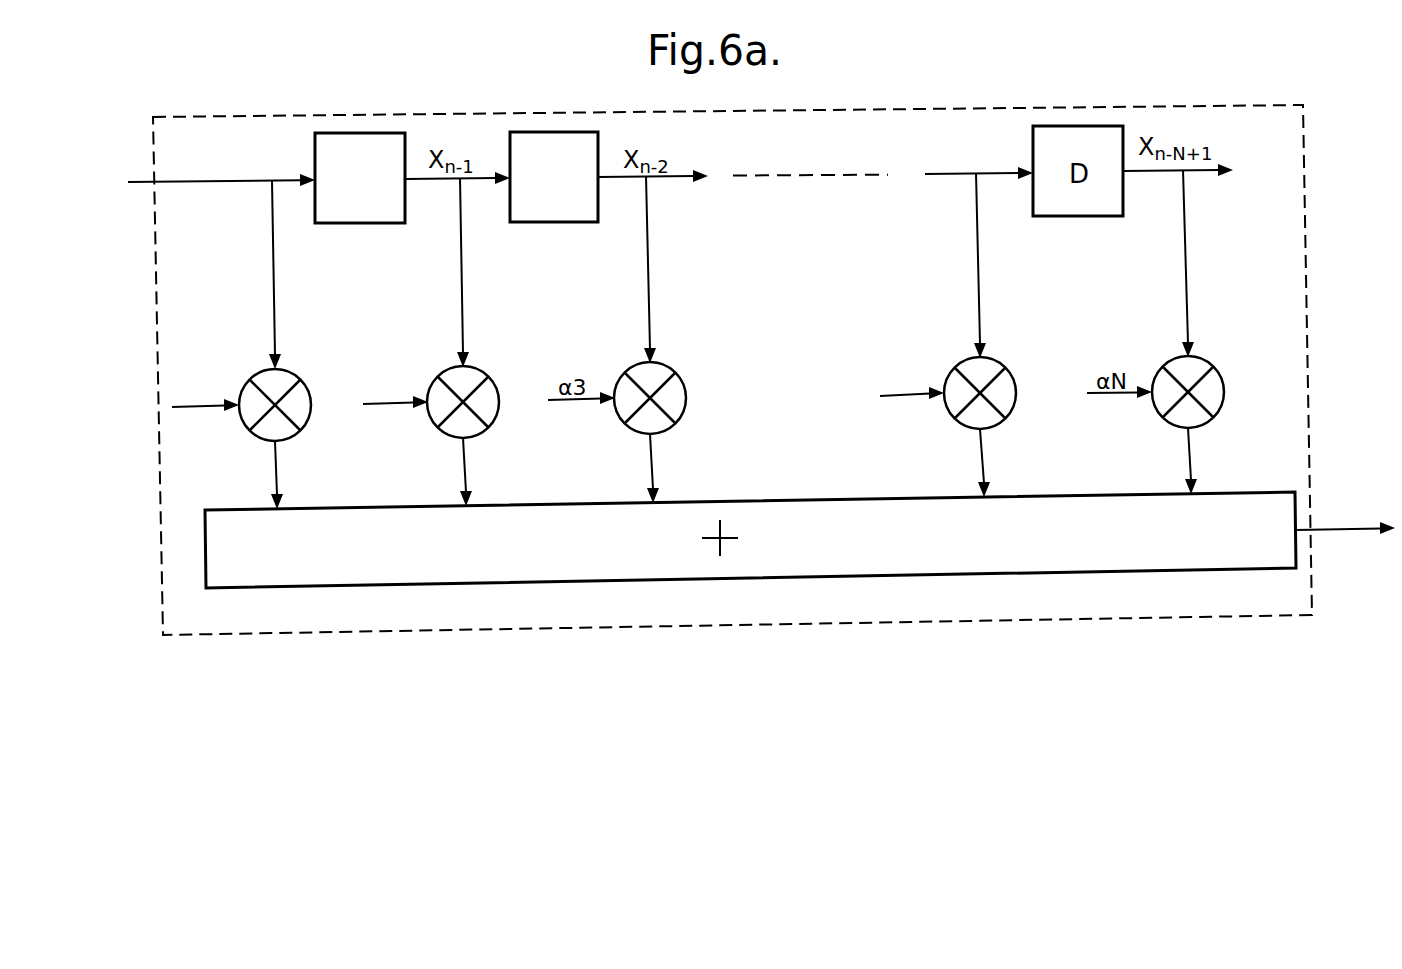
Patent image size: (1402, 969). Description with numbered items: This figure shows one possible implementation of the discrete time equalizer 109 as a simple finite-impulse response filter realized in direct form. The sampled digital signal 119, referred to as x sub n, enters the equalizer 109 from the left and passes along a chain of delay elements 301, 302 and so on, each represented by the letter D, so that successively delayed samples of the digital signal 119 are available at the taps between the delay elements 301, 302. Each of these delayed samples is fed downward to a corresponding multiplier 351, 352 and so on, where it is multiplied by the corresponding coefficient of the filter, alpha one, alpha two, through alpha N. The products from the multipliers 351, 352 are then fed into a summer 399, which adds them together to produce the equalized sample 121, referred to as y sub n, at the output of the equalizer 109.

The discrete time equalizer 109 is at (722, 625).
The sampled digital signal 119 is at (142, 183).
The delay element 301 is at (357, 224).
The delay element 302 is at (560, 223).
The multiplier 351 is at (300, 437).
The multiplier 352 is at (488, 432).
The summer 399 is at (555, 582).
The equalized sample 121 is at (1333, 531).